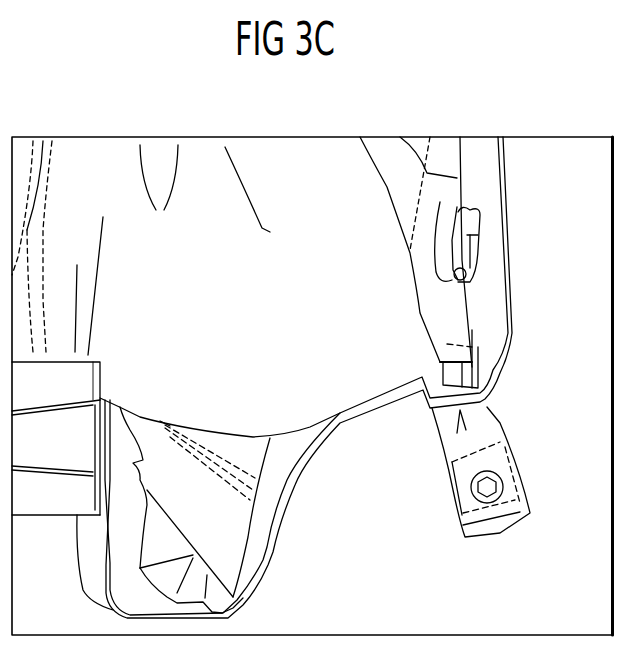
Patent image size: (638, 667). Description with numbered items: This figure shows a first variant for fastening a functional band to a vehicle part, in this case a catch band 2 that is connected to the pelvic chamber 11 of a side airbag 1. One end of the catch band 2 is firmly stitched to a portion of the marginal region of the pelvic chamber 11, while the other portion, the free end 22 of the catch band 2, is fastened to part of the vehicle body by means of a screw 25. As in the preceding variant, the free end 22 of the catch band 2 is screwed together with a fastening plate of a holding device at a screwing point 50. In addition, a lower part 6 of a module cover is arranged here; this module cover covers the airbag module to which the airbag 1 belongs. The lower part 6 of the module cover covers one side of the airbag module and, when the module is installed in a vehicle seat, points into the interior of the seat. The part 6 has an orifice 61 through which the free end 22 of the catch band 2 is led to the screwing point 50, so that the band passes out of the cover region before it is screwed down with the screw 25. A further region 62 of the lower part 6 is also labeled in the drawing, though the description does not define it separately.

The side airbag 1 is at (287, 137).
The pelvic chamber 11 is at (345, 195).
The lower part of module cover 6 is at (495, 256).
The strip intermediate portion 62 is at (488, 297).
The orifice 61 is at (480, 366).
The catch band 2 is at (480, 423).
The free end of catch band 22 is at (515, 515).
The screwing point 50 is at (503, 477).
The screw 25 is at (482, 487).